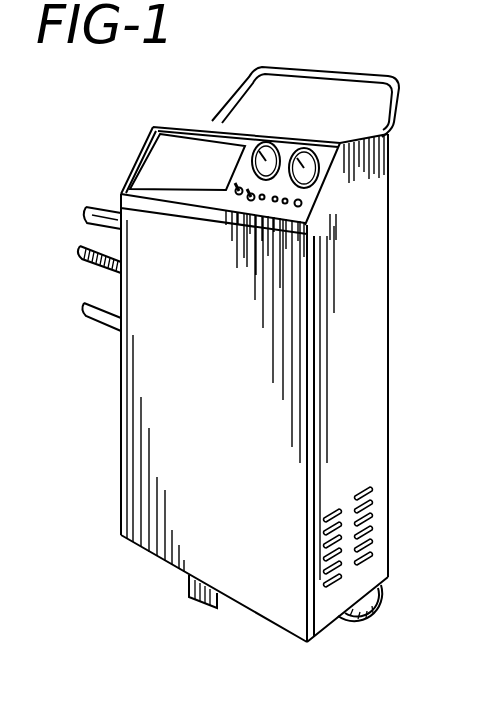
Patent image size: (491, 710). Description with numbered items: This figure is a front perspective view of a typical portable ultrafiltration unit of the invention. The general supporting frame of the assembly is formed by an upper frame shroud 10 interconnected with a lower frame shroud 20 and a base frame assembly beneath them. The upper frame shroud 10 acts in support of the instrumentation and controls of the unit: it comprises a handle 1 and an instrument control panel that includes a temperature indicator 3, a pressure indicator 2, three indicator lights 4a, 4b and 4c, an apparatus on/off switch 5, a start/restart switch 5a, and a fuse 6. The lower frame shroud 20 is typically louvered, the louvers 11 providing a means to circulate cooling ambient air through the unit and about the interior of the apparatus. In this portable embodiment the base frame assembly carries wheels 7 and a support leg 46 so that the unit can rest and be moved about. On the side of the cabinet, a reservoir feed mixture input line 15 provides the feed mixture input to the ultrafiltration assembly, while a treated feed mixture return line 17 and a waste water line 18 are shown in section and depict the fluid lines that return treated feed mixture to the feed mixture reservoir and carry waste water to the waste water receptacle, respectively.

The handle 1 is at (258, 70).
The pressure indicator 2 is at (266, 160).
The temperature indicator 3 is at (307, 165).
The indicator light 4a is at (262, 200).
The indicator light 4b is at (275, 202).
The indicator light 4c is at (285, 204).
The apparatus on/off switch 5 is at (236, 188).
The start/restart switch 5a is at (246, 198).
The fuse 6 is at (300, 204).
The wheels 7 is at (364, 612).
The upper frame shroud 10 is at (366, 210).
The louvers 11 is at (367, 483).
The reservoir feed mixture input line 15 is at (85, 263).
The treated feed mixture return line 17 is at (92, 222).
The waste water line 18 is at (93, 312).
The lower frame shroud 20 is at (212, 351).
The support leg 46 is at (190, 596).